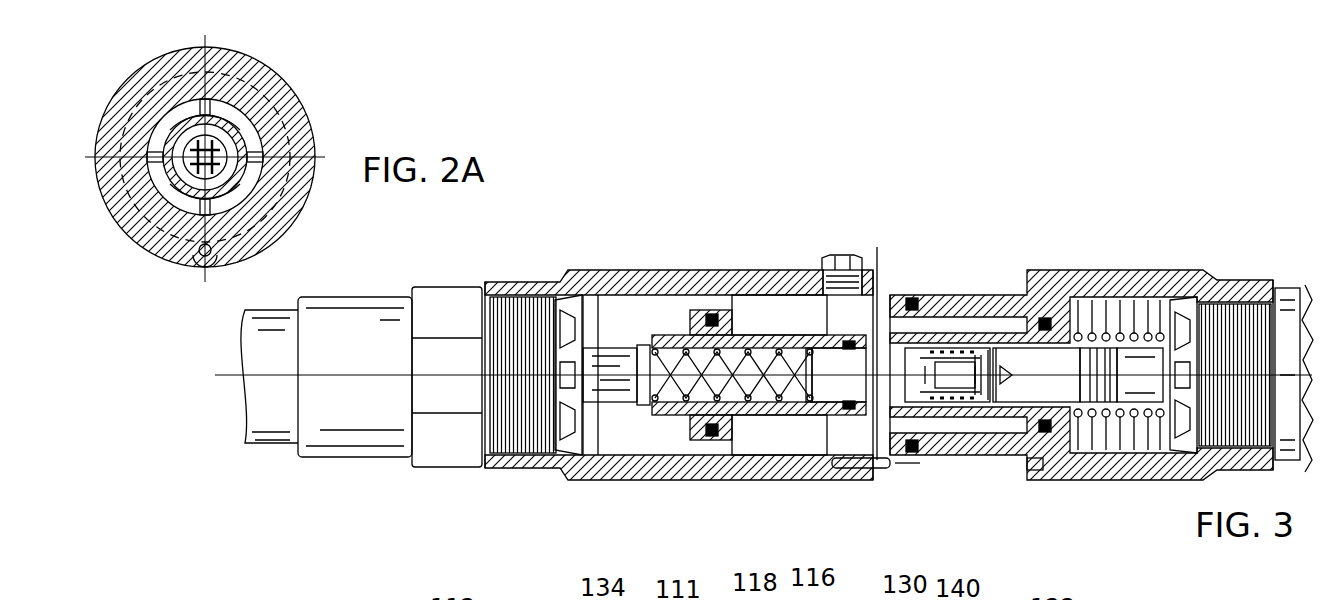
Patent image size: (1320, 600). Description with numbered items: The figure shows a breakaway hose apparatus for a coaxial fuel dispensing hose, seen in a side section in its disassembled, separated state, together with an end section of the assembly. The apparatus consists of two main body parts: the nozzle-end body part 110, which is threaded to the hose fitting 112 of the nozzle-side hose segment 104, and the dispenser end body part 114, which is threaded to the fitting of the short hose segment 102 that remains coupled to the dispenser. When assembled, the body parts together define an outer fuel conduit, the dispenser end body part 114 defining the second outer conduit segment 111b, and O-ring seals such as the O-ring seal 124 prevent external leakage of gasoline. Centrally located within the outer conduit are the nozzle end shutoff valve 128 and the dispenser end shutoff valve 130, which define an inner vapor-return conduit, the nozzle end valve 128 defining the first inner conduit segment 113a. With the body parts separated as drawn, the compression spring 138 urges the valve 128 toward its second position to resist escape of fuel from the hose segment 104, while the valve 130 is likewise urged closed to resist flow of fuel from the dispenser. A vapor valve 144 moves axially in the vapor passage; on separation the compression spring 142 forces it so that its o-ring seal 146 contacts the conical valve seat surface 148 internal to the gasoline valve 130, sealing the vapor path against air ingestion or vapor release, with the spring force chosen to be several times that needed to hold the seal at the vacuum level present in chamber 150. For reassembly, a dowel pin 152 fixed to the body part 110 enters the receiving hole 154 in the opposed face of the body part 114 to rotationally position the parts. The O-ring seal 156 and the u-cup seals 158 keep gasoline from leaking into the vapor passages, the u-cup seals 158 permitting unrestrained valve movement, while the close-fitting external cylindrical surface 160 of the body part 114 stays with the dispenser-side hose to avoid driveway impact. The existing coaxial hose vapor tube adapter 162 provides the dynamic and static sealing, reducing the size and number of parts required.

In FIG. 3, the hose segment 102 is at (1290, 290).
In FIG. 3, the hose segment 104 is at (362, 298).
In FIG. 3, the nozzle-end body part 110 is at (530, 283).
In FIG. 2A, the second outer conduit segment 111b is at (243, 118).
In FIG. 3, the hose fitting 112 is at (425, 286).
In FIG. 2A, the first inner conduit segment 113a is at (190, 205).
In FIG. 2A, the dispenser end body part 114 is at (252, 232).
In FIG. 3, the O-ring seal 124 is at (490, 300).
In FIG. 3, the nozzle end shutoff valve 128 is at (760, 320).
In FIG. 2A, the dispenser end shutoff valve 130 is at (240, 135).
In FIG. 3, the dispenser end shutoff valve 130 is at (1050, 320).
In FIG. 3, the compression spring 138 is at (778, 413).
In FIG. 3, the compression spring 142 is at (948, 400).
In FIG. 2A, the vapor valve 144 is at (242, 178).
In FIG. 3, the vapor valve 144 is at (945, 348).
In FIG. 3, the o-ring seal 146 is at (987, 400).
In FIG. 3, the conical valve seat surface 148 is at (988, 350).
In FIG. 3, the chamber 150 is at (1066, 396).
In FIG. 2A, the dowel pin 152 is at (207, 258).
In FIG. 3, the dowel pin 152 is at (878, 470).
In FIG. 3, the receiving hole 154 is at (1034, 471).
In FIG. 3, the O-ring seal 156 is at (850, 345).
In FIG. 3, the u-cup seals 158 is at (1095, 405).
In FIG. 3, the external cylindrical surface 160 is at (923, 296).
In FIG. 3, the coaxial hose vapor tube adapter 162 is at (1140, 345).